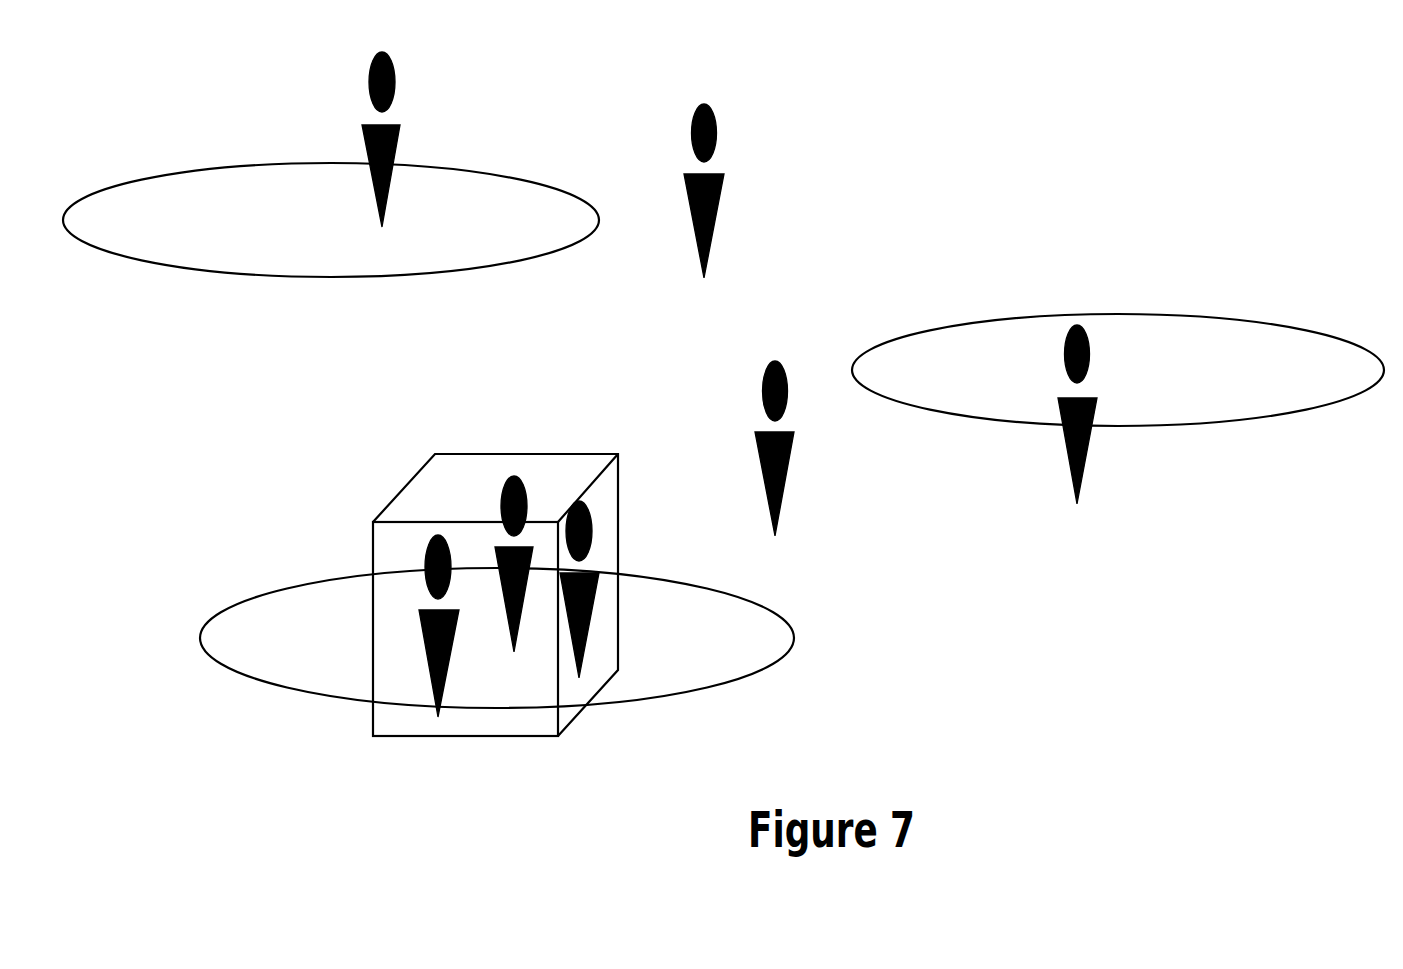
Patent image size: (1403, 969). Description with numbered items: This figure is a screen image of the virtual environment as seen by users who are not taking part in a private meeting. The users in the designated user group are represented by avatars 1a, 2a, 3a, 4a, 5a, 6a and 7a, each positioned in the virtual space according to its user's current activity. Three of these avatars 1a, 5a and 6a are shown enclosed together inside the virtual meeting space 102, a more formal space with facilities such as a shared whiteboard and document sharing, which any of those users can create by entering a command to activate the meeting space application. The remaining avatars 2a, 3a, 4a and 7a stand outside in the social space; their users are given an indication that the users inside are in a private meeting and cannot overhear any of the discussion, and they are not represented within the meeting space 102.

The avatar 1a is at (528, 497).
The avatar 2a is at (390, 205).
The avatar 3a is at (783, 377).
The avatar 4a is at (684, 106).
The avatar 5a is at (593, 530).
The avatar 6a is at (436, 530).
The avatar 7a is at (1094, 340).
The virtual meeting space 102 is at (618, 553).